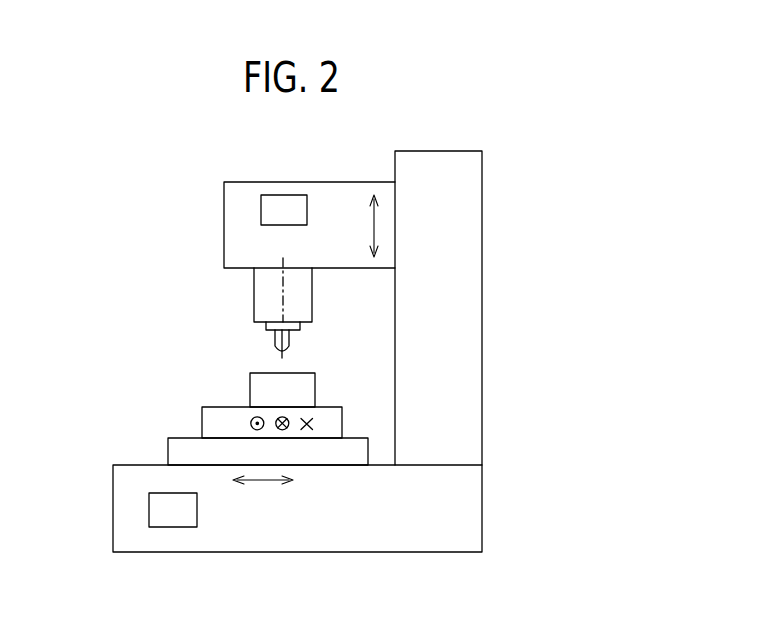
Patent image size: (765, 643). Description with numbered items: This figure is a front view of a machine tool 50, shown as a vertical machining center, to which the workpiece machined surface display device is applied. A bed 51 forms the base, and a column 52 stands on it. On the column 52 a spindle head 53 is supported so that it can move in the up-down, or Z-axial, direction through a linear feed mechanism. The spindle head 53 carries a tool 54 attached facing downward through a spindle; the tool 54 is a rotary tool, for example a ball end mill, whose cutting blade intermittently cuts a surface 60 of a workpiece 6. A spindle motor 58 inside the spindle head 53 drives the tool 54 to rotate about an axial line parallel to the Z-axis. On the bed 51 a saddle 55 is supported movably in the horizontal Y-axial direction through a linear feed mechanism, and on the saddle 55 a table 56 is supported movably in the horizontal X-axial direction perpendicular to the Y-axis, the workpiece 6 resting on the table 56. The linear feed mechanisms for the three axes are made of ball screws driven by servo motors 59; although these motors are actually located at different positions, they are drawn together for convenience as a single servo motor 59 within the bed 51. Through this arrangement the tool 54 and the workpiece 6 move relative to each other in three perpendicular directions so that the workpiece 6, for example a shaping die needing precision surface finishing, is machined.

The machine tool 50 is at (515, 227).
The bed 51 is at (233, 552).
The column 52 is at (480, 333).
The spindle head 53 is at (224, 215).
The tool 54 is at (274, 340).
The saddle 55 is at (168, 455).
The table 56 is at (202, 420).
The spindle motor 58 is at (280, 195).
The servo motor 59 is at (169, 527).
The surface of workpiece 60 is at (262, 373).
The workpiece 6 is at (248, 387).